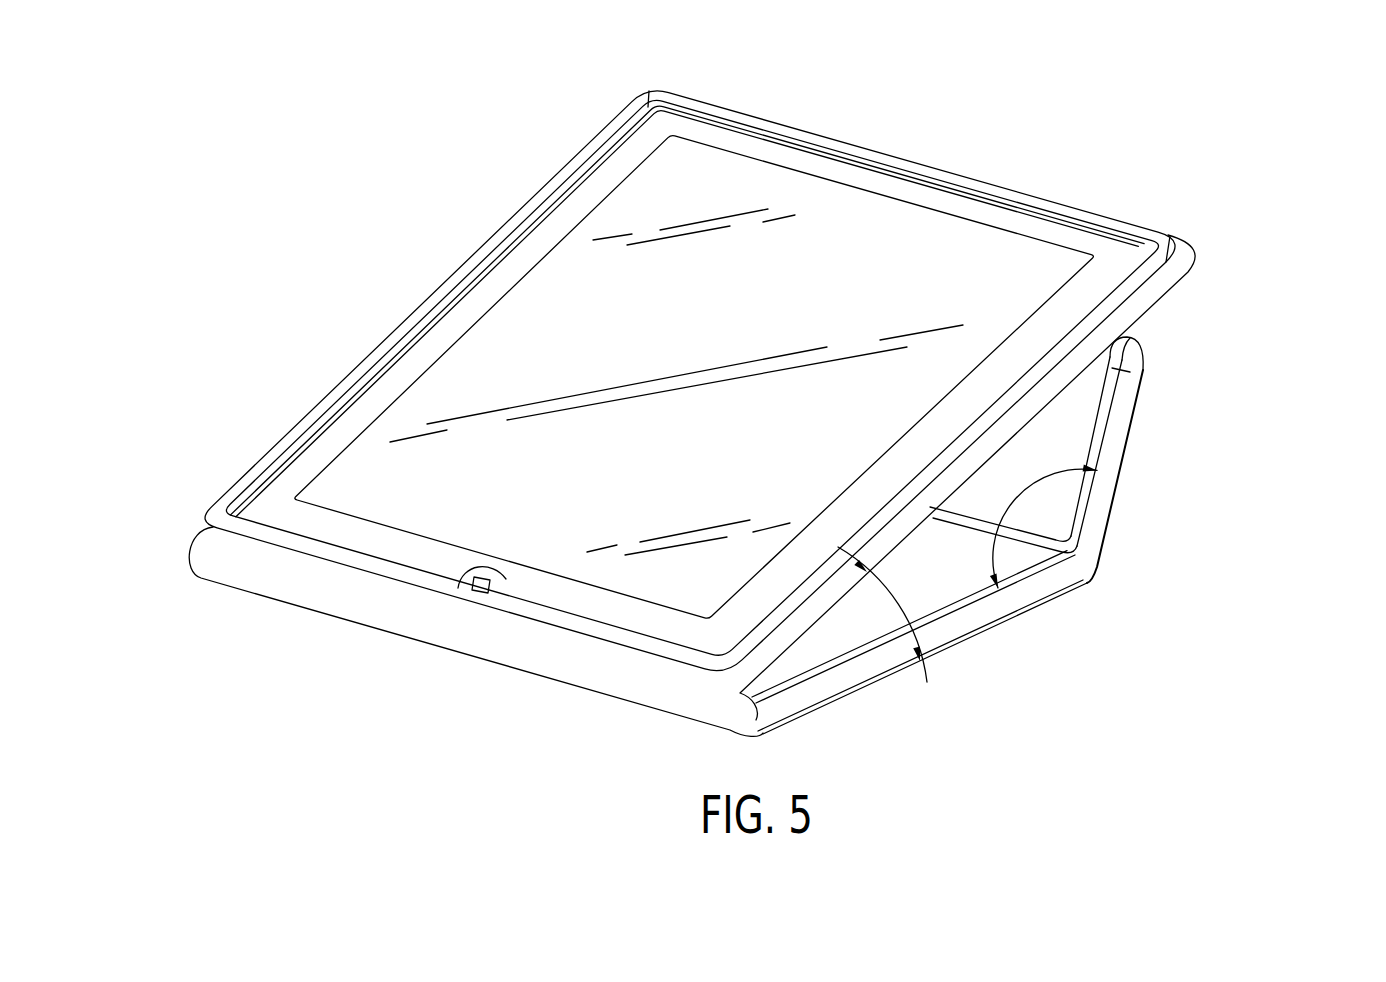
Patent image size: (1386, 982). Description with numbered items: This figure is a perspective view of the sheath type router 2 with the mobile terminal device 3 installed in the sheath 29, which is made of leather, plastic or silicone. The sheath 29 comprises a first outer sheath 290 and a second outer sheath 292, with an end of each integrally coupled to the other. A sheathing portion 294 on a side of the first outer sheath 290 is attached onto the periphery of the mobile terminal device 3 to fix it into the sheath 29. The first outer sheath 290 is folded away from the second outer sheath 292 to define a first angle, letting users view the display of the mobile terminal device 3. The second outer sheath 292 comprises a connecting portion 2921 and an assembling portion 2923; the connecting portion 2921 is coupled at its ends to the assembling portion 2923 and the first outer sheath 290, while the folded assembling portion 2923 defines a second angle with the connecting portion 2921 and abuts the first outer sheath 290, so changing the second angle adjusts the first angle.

The sheath type router 2 is at (1200, 102).
The mobile terminal device 3 is at (867, 183).
The sheath 29 is at (1245, 267).
The first outer sheath 290 is at (1120, 313).
The sheathing portion 294 is at (420, 309).
The second outer sheath 292 is at (1199, 580).
The connecting portion 2921 is at (1073, 583).
The assembling portion 2923 is at (1103, 433).